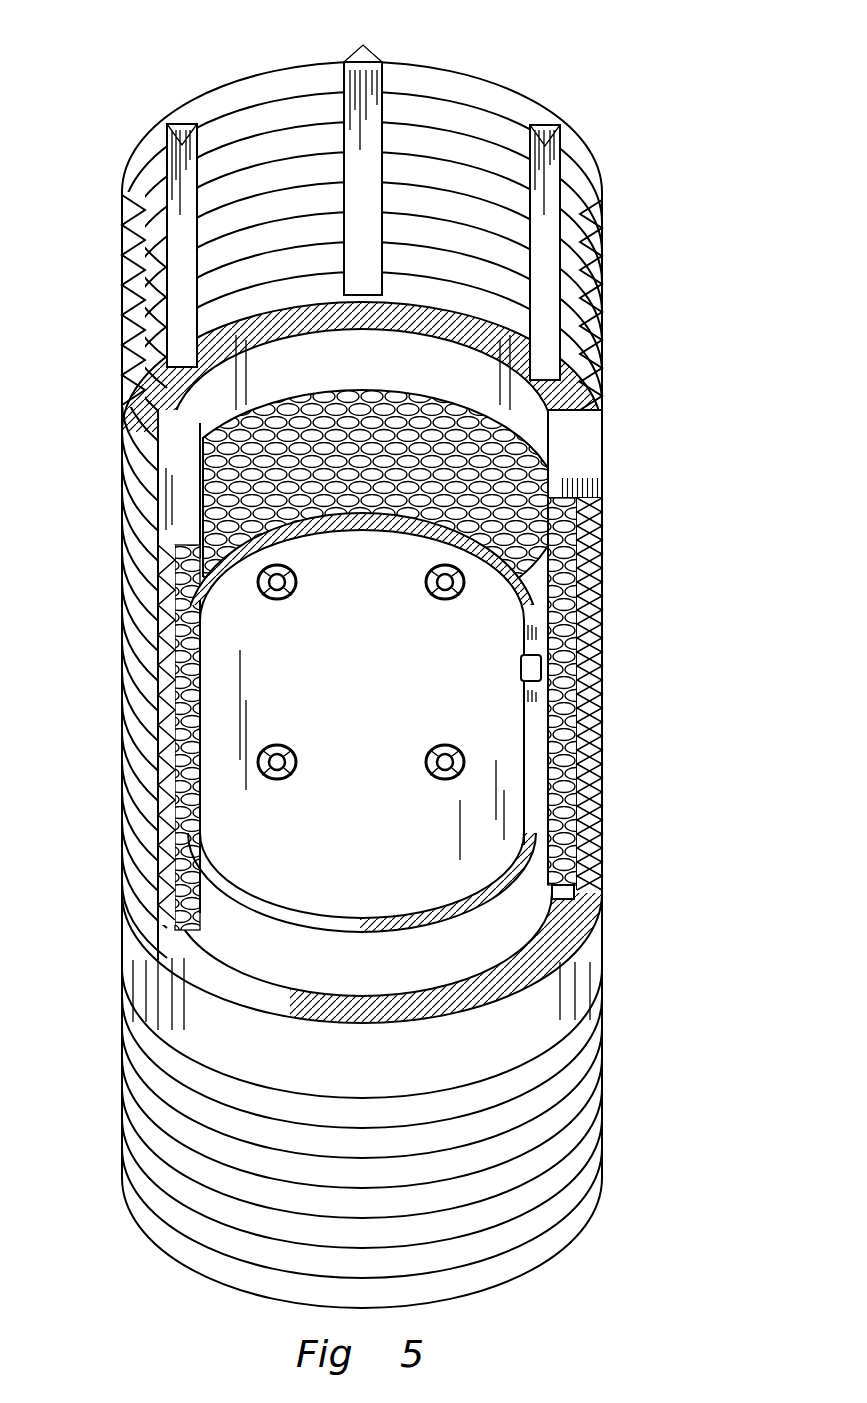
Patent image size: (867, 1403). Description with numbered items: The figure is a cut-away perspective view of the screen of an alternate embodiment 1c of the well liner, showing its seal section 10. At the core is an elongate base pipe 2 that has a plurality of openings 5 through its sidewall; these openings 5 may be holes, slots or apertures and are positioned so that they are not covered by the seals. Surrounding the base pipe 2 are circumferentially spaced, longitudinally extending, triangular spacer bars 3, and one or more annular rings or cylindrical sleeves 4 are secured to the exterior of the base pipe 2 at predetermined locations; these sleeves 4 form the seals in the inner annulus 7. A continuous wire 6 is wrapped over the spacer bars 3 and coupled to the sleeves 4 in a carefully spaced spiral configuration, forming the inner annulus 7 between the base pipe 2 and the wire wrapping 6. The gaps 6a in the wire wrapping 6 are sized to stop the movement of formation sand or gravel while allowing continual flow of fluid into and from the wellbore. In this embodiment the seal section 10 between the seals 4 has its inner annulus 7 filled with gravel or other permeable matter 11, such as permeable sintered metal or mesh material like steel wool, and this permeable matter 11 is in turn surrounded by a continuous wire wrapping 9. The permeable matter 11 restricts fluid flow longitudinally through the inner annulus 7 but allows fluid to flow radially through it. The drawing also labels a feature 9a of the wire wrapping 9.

The embodiment 1c is at (112, 555).
The base pipe 2 is at (526, 593).
The spacer bars 3 is at (366, 58).
The annular rings or cylindrical sleeves 4 is at (150, 487).
The openings 5 is at (289, 766).
The continuous wire 6 is at (588, 247).
The gaps 6a is at (134, 314).
The inner annulus 7 is at (578, 899).
The continuous wire wrapping 9 is at (590, 582).
The sleeve thread 9a is at (600, 656).
The seal section 10 is at (658, 410).
The permeable matter 11 is at (379, 407).